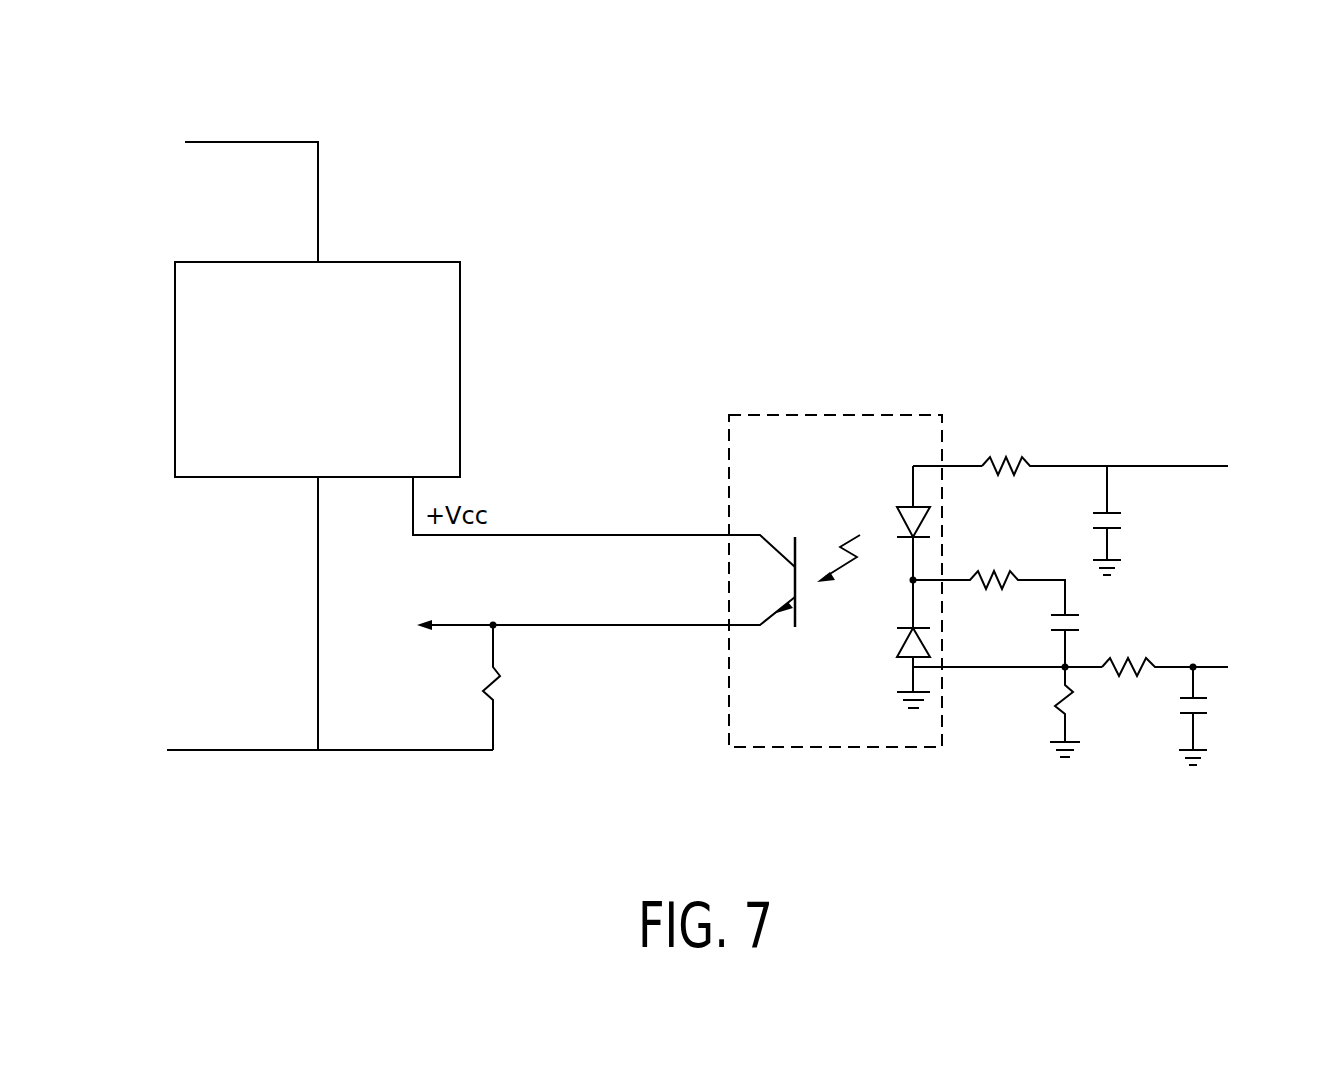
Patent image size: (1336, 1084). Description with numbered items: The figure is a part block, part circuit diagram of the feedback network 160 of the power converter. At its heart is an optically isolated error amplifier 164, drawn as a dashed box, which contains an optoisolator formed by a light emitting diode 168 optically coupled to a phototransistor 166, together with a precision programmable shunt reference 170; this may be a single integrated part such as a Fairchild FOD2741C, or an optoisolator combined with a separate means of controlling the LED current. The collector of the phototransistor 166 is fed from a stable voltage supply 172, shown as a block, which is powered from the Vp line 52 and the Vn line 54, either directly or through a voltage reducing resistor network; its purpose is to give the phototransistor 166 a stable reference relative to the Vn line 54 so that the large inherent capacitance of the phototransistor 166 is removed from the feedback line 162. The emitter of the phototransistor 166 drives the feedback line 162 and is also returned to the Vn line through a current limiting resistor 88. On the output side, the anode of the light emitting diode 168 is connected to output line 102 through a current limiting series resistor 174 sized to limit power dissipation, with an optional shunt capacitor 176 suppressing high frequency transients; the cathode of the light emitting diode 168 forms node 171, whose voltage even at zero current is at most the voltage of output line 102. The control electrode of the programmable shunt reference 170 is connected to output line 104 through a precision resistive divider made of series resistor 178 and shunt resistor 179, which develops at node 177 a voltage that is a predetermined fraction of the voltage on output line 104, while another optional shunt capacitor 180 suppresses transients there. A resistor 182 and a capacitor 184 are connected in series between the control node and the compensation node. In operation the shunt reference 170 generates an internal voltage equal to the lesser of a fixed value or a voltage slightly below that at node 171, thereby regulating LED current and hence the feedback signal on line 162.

The Vp line 52 is at (216, 142).
The Vn line 54 is at (268, 750).
The current limiting resistor 88 is at (490, 686).
The output line 102 is at (1198, 466).
The output line 104 is at (1210, 667).
The feedback network 160 is at (740, 300).
The feedback line 162 is at (521, 625).
The optically isolated error amplifier 164 is at (865, 452).
The phototransistor 166 is at (768, 675).
The light emitting diode 168 is at (903, 525).
The precision programmable shunt reference 170 is at (900, 633).
The node 171 is at (913, 580).
The stable voltage supply 172 is at (447, 313).
The current limiting series resistor 174 is at (988, 458).
The shunt capacitor 176 is at (1110, 510).
The node 177 is at (950, 667).
The series resistor 178 is at (1138, 678).
The shunt resistor 179 is at (1052, 697).
The shunt capacitor 180 is at (1205, 699).
The resistor 182 is at (975, 572).
The capacitor 184 is at (1073, 614).